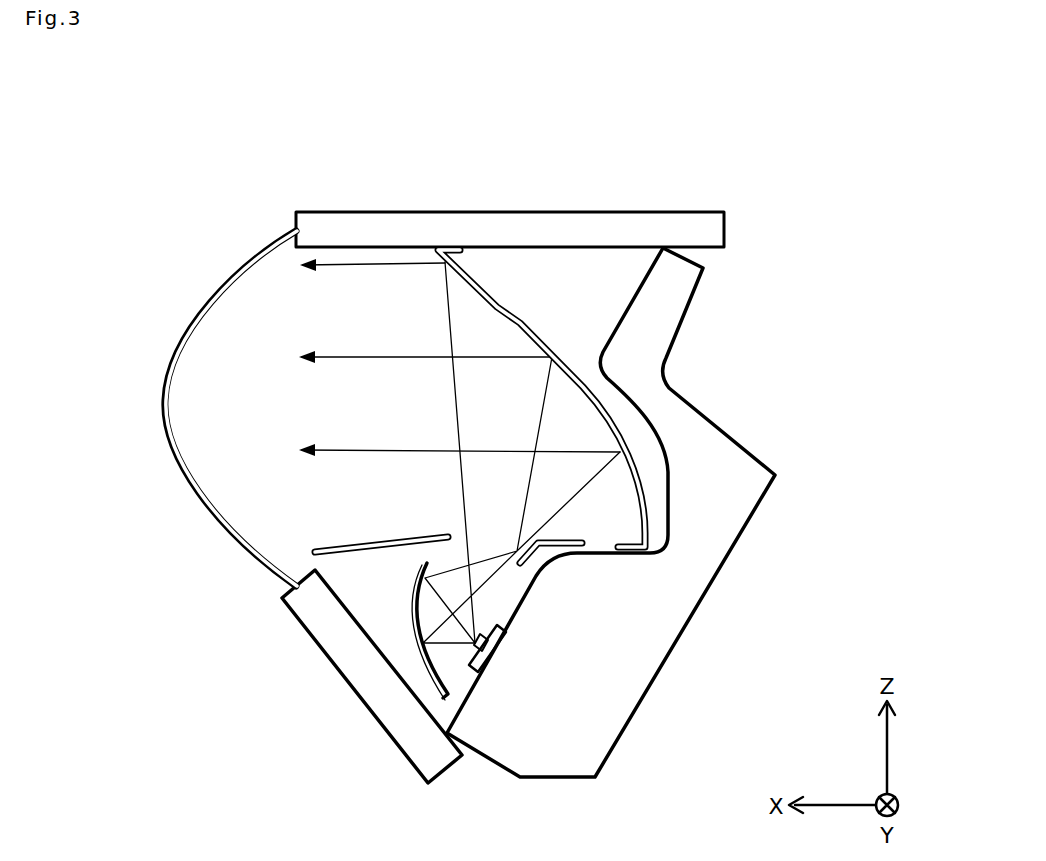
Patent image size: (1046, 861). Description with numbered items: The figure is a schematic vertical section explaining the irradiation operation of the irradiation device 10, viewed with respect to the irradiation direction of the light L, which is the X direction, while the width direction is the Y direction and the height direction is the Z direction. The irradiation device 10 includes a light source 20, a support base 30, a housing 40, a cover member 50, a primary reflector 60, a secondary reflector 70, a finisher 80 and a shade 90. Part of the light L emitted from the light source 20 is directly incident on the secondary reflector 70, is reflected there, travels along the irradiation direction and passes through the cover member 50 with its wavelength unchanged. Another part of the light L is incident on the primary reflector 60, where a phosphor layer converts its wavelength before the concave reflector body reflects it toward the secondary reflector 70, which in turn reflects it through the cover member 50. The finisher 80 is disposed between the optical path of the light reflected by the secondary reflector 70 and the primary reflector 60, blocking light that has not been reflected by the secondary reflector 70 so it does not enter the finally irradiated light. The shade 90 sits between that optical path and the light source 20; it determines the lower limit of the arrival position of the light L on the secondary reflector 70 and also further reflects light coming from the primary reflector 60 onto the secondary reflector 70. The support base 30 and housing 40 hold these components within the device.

The irradiation device 10 is at (192, 171).
The light source 20 is at (470, 664).
The support base 30 is at (680, 605).
The housing 40 is at (561, 222).
The cover member 50 is at (230, 537).
The primary reflector 60 is at (396, 615).
The secondary reflector 70 is at (617, 423).
The finisher 80 is at (343, 543).
The shade 90 is at (562, 537).